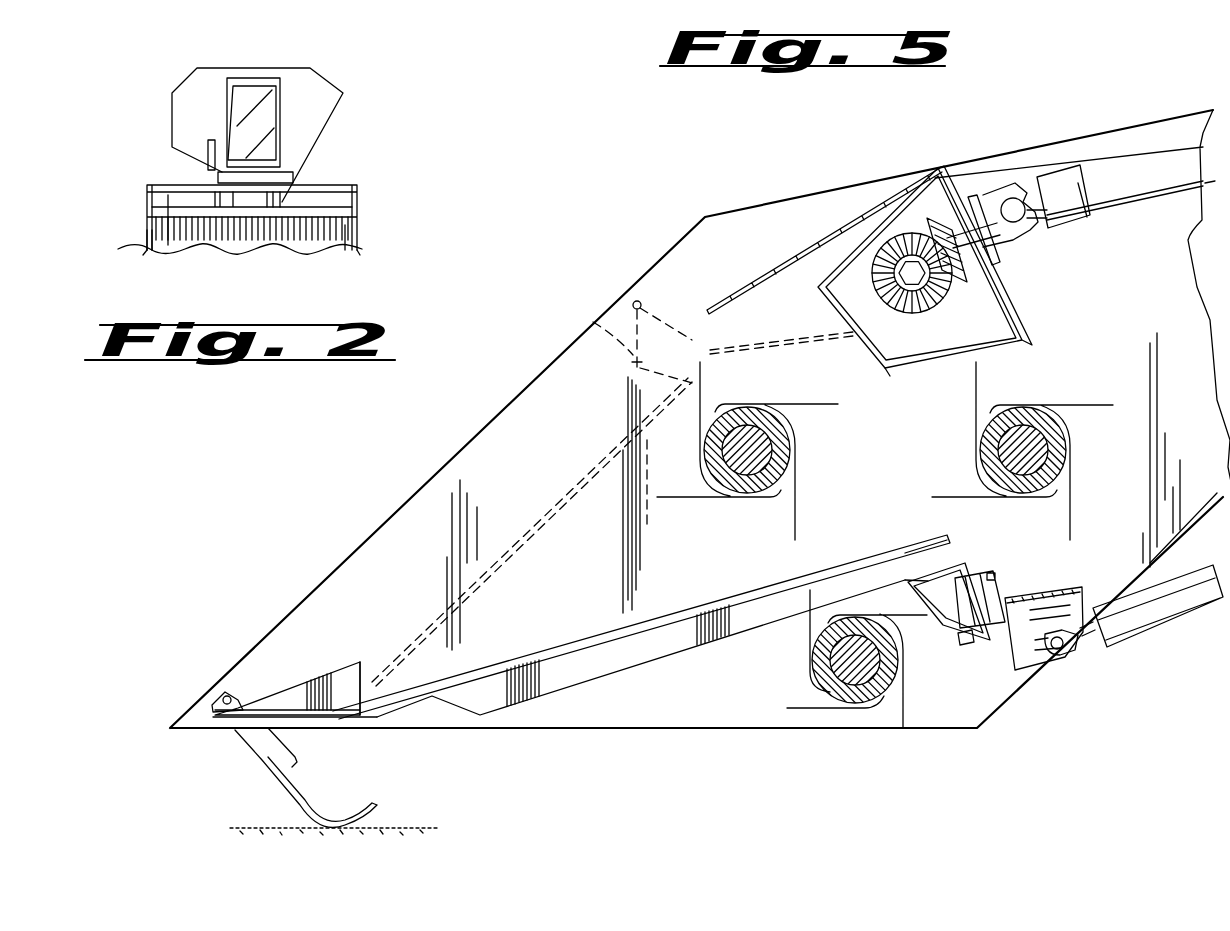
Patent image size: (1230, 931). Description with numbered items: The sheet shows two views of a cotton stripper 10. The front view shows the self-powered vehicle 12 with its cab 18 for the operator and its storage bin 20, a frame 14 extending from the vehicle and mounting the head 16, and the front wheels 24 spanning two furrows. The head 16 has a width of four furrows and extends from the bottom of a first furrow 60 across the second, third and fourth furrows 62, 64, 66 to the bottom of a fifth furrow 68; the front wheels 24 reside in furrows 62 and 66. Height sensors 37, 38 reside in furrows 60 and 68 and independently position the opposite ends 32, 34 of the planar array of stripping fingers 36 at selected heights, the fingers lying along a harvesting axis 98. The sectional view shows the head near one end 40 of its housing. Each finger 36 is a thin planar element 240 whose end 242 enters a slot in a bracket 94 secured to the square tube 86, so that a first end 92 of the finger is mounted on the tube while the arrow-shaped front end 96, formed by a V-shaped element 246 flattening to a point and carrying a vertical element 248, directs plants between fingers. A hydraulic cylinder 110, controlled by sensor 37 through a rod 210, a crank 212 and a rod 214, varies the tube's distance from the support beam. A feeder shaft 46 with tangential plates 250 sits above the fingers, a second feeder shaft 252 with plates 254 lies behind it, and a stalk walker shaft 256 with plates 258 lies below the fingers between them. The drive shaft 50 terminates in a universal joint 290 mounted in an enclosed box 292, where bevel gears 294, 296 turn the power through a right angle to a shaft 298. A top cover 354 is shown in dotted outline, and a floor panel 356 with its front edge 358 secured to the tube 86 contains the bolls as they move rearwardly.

In FIG. 2, the cotton stripper 10 is at (330, 90).
In FIG. 2, the vehicle 12 is at (293, 127).
In FIG. 2, the frame 14 is at (283, 201).
In FIG. 2, the head 16 is at (355, 200).
In FIG. 5, the head 16 is at (537, 377).
In FIG. 2, the cab 18 is at (251, 92).
In FIG. 2, the storage bin 20 is at (172, 94).
In FIG. 2, the front wheels 24 is at (195, 249).
In FIG. 2, the end of array of fingers 32 is at (150, 226).
In FIG. 2, the opposite end of array of fingers 34 is at (333, 201).
In FIG. 2, the stripping fingers 36 is at (170, 212).
In FIG. 5, the stripping fingers 36 is at (432, 696).
In FIG. 2, the height sensor 37 is at (143, 240).
In FIG. 5, the height sensor 37 is at (300, 808).
In FIG. 2, the height sensor 38 is at (358, 246).
In FIG. 5, the end of hollow housing 40 is at (552, 718).
In FIG. 5, the feeder shaft 46 is at (762, 450).
In FIG. 5, the drive shaft 50 is at (1123, 160).
In FIG. 2, the first furrow 60 is at (152, 246).
In FIG. 2, the second furrow 62 is at (200, 250).
In FIG. 2, the third furrow 64 is at (250, 256).
In FIG. 2, the fourth furrow 66 is at (300, 250).
In FIG. 2, the fifth furrow 68 is at (355, 250).
In FIG. 5, the elongated tube 86 is at (1000, 597).
In FIG. 5, the first end of finger 92 is at (897, 583).
In FIG. 5, the bracket 94 is at (952, 577).
In FIG. 5, the second end of finger 96 is at (288, 693).
In FIG. 2, the harvesting axis 98 is at (342, 251).
In FIG. 5, the harvesting axis 98 is at (213, 712).
In FIG. 5, the hydraulic cylinder 110 is at (1133, 637).
In FIG. 5, the rod 210 is at (544, 504).
In FIG. 5, the crank 212 is at (593, 322).
In FIG. 5, the rod 214 is at (772, 345).
In FIG. 5, the planar element 240 is at (612, 660).
In FIG. 5, the end of planar element 242 is at (905, 553).
In FIG. 5, the V-shaped element 246 is at (557, 650).
In FIG. 5, the vertically extending element 248 is at (360, 662).
In FIG. 5, the elongated plates 250 is at (793, 525).
In FIG. 5, the second feeder shaft 252 is at (1023, 443).
In FIG. 5, the plates 254 is at (1097, 403).
In FIG. 5, the stalk walker shaft 256 is at (860, 683).
In FIG. 5, the elongated plates 258 is at (907, 713).
In FIG. 5, the universal joint 290 is at (1020, 237).
In FIG. 5, the enclosed elongated box 292 is at (1027, 322).
In FIG. 5, the bevel gear 294 is at (965, 283).
In FIG. 5, the bevel gear 296 is at (885, 240).
In FIG. 5, the shaft 298 is at (900, 312).
In FIG. 5, the top cover 354 is at (804, 250).
In FIG. 5, the floor panel 356 is at (1098, 580).
In FIG. 5, the front edge of floor panel 358 is at (1023, 600).